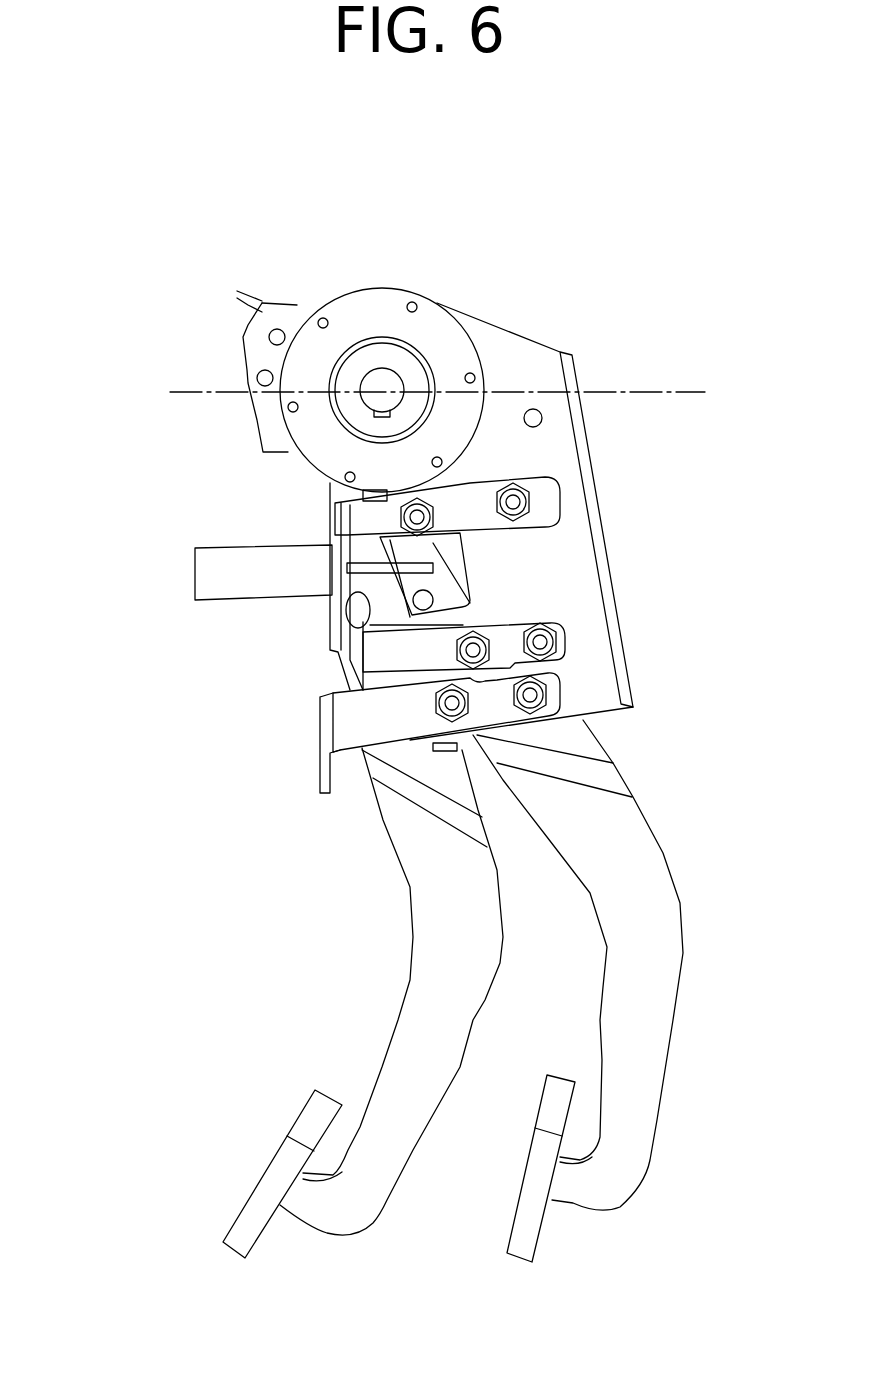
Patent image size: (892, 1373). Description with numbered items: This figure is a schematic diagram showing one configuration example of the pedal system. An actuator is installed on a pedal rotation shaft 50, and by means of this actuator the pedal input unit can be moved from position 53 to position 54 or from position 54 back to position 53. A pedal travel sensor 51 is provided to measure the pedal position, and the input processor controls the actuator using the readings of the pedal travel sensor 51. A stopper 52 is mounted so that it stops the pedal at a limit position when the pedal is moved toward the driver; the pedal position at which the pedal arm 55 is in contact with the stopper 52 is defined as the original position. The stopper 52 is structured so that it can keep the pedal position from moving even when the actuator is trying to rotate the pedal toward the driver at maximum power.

The pedal rotation shaft 50 is at (367, 308).
The pedal travel sensor 51 is at (223, 580).
The stopper 52 is at (328, 727).
The pedal input unit position 53 is at (270, 1187).
The pedal input unit position 54 is at (523, 1233).
The pedal arm 55 is at (430, 983).